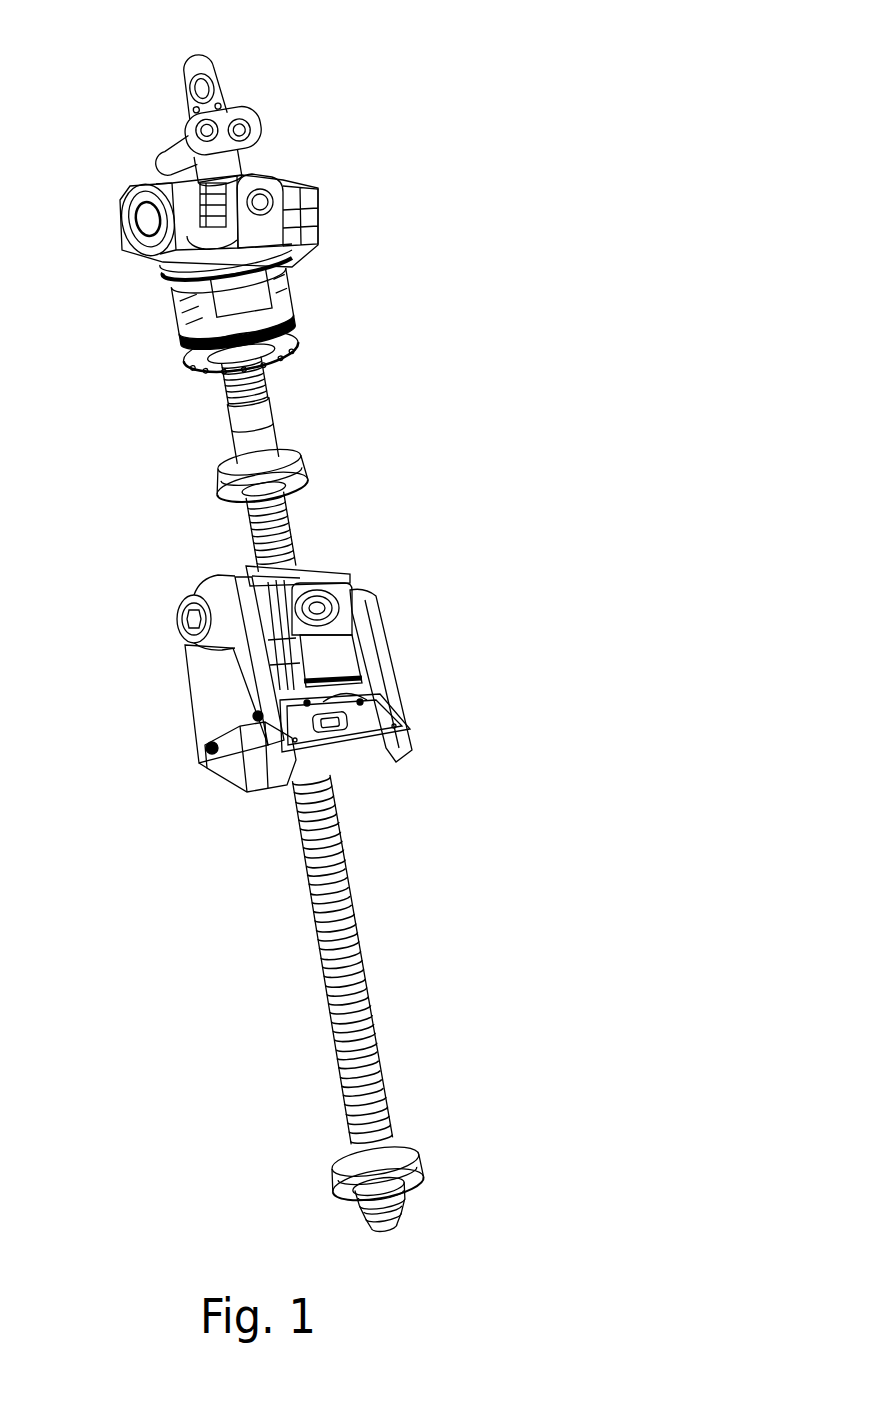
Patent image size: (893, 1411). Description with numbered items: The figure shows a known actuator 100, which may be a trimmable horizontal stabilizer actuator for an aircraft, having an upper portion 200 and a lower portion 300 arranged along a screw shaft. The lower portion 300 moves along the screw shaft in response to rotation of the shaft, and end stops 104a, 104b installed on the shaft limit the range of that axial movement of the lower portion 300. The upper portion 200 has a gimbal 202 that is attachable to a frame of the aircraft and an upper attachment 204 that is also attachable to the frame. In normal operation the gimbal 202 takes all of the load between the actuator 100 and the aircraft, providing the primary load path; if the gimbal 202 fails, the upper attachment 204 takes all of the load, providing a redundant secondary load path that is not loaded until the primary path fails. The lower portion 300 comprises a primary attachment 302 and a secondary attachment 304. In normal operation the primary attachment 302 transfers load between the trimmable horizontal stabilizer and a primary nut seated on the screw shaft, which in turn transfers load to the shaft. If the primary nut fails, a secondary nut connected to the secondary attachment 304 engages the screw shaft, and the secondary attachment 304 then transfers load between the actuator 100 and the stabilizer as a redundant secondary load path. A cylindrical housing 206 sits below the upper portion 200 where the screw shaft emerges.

The actuator 100 is at (338, 98).
The upper portion 200 is at (364, 211).
The gimbal 202 is at (148, 188).
The upper attachment 204 is at (222, 117).
The cylindrical housing 206 is at (258, 305).
The end stop 104b is at (288, 473).
The lower portion 300 is at (430, 657).
The primary attachment 302 is at (212, 642).
The secondary attachment 304 is at (362, 742).
The end stop 104a is at (392, 1155).